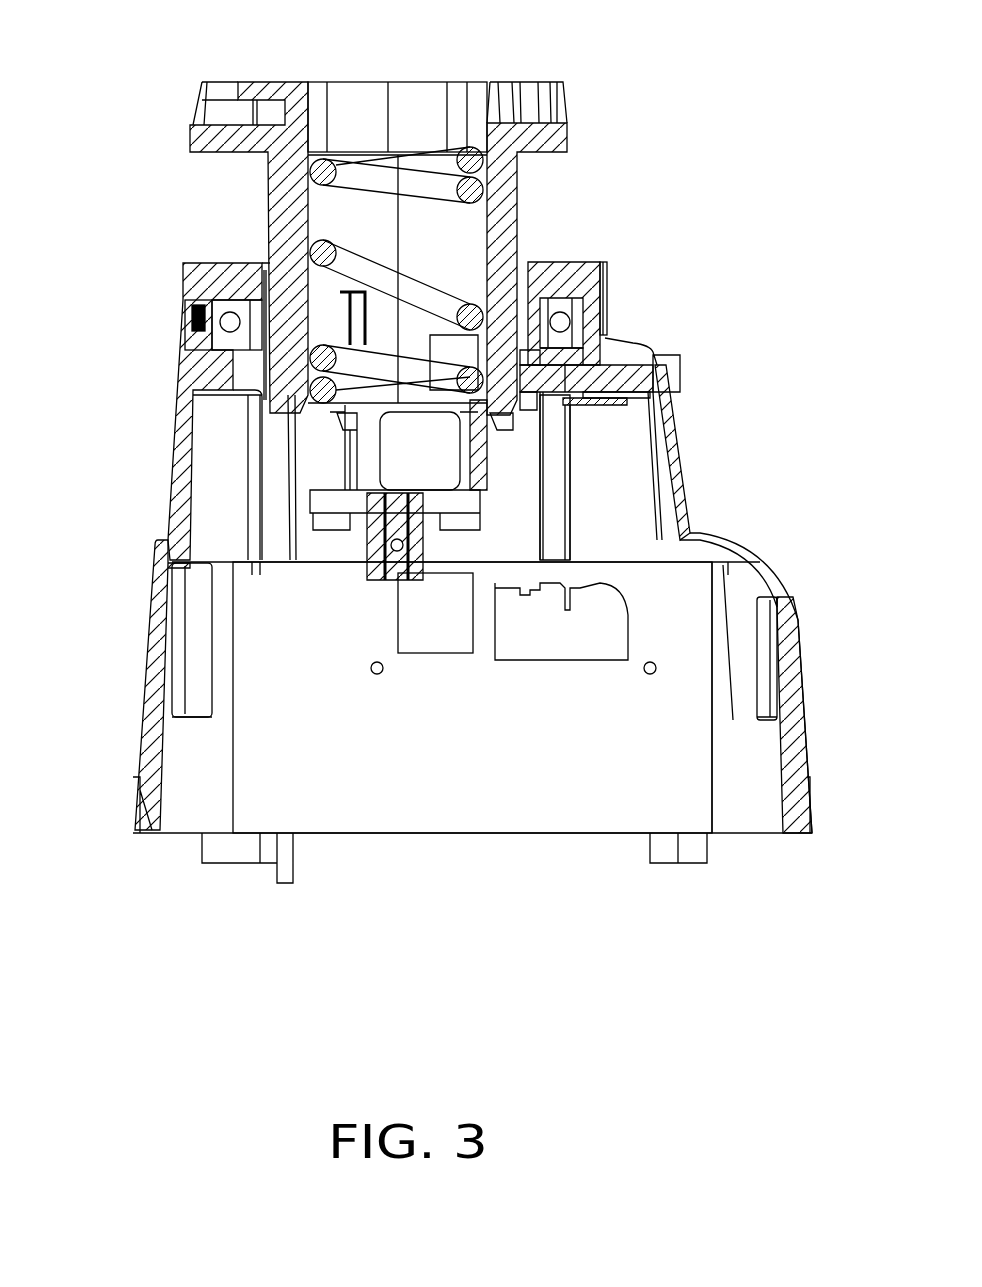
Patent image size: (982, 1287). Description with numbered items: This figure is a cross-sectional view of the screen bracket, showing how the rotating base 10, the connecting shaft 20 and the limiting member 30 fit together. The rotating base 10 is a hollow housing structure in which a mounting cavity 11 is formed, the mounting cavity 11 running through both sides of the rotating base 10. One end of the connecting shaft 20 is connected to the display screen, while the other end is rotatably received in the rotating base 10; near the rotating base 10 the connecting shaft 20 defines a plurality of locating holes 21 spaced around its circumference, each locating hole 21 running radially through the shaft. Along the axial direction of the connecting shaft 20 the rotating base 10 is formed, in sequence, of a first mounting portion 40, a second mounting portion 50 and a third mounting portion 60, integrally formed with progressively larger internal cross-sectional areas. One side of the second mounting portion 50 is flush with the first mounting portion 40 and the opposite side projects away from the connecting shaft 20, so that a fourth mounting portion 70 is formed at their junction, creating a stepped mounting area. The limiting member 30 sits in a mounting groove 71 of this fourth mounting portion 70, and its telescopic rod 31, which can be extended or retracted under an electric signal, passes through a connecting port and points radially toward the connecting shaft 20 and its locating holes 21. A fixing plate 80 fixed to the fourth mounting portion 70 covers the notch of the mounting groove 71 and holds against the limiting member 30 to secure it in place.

The rotating base 10 is at (148, 400).
The mounting cavity 11 is at (622, 717).
The connecting shaft 20 is at (247, 272).
The locating hole 21 is at (565, 408).
The limiting member 30 is at (623, 383).
The telescopic rod 31 is at (557, 375).
The first mounting portion 40 is at (185, 334).
The second mounting portion 50 is at (178, 515).
The third mounting portion 60 is at (150, 720).
The fourth mounting portion 70 is at (637, 355).
The mounting groove 71 is at (657, 375).
The fixing plate 80 is at (533, 388).